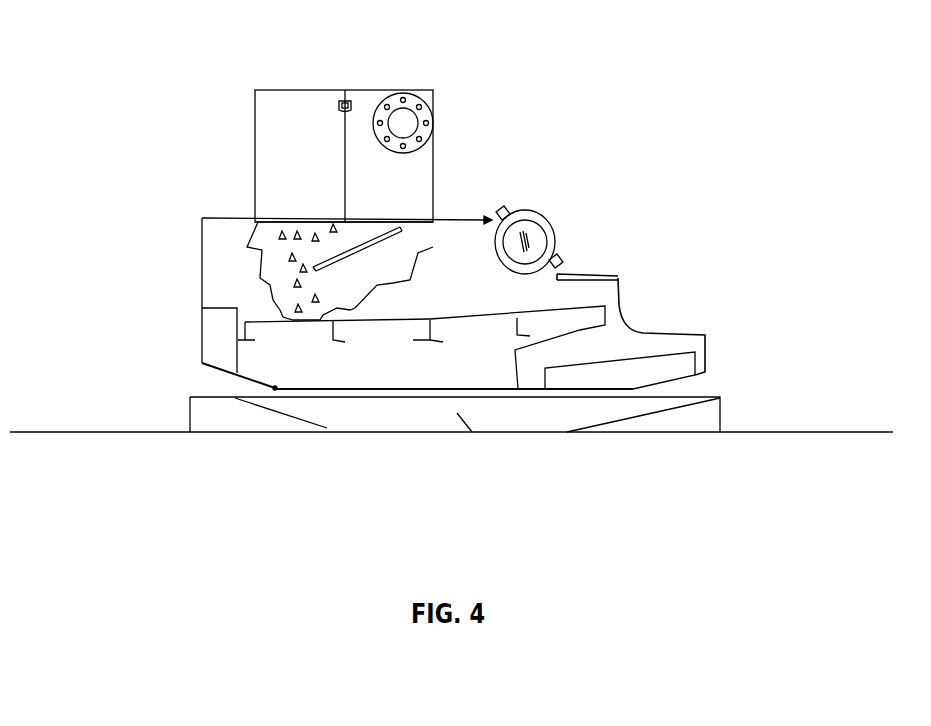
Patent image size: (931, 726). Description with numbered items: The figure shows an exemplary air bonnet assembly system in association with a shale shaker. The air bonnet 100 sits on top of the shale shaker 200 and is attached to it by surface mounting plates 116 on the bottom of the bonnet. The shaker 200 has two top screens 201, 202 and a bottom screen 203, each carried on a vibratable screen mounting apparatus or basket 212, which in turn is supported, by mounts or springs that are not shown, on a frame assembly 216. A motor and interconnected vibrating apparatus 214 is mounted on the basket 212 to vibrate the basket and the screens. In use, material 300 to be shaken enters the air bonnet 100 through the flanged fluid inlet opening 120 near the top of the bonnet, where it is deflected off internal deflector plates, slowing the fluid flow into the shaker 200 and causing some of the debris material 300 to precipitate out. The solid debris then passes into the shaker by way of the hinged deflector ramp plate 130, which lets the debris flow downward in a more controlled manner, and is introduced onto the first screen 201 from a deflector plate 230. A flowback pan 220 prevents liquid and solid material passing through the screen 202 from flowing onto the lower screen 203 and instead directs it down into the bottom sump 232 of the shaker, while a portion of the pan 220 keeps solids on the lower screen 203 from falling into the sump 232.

The air bonnet assembly 100 is at (323, 89).
The flanged fluid inlet opening 120 is at (433, 108).
The surface mounting plates 116 is at (230, 217).
The shale shaker 200 is at (196, 277).
The deflector plate 230 is at (203, 310).
The basket 212 is at (215, 368).
The material 300 is at (277, 237).
The hinged deflector ramp plate 130 is at (360, 250).
The first top screen 201 is at (372, 323).
The second top screen 202 is at (477, 315).
The bottom screen 203 is at (650, 340).
The vibrating apparatus 214 is at (532, 208).
The flowback pan 220 is at (582, 325).
The frame assembly 216 is at (722, 410).
The bottom sump 232 is at (457, 413).